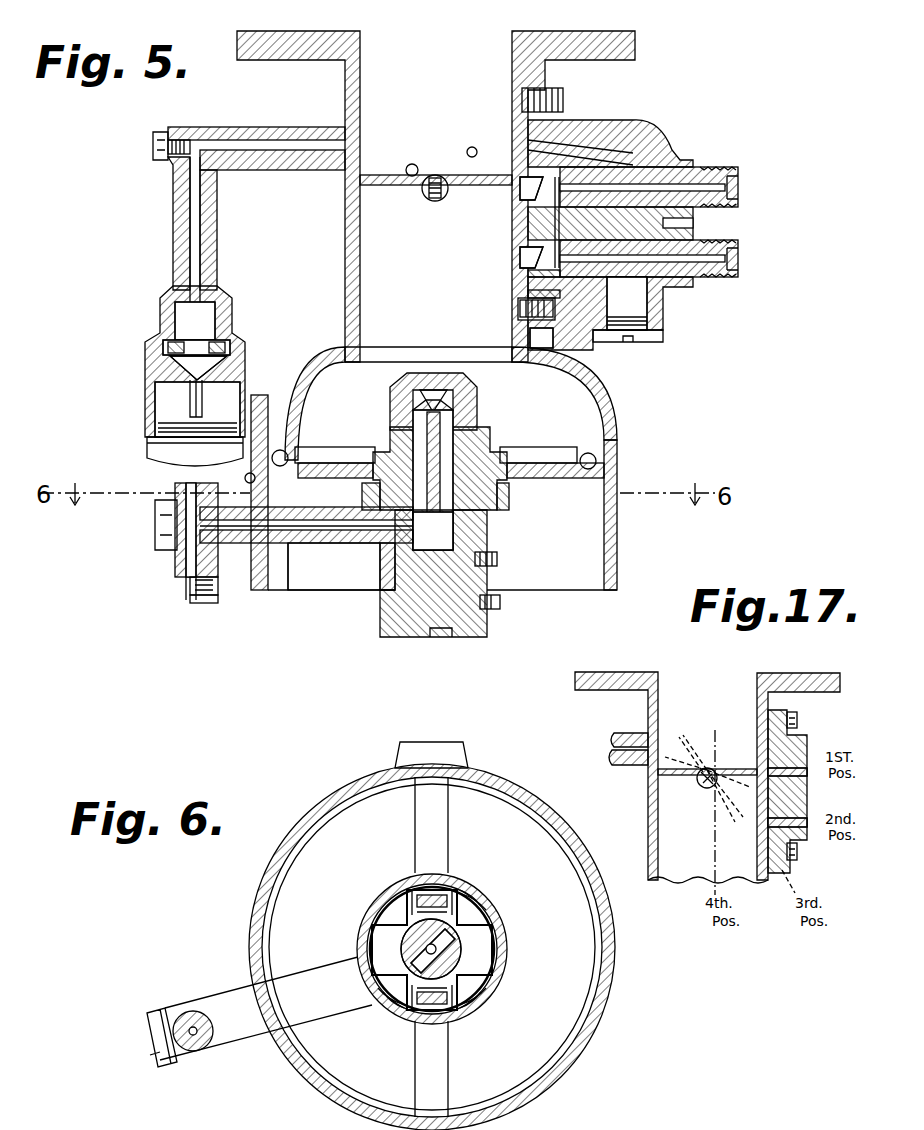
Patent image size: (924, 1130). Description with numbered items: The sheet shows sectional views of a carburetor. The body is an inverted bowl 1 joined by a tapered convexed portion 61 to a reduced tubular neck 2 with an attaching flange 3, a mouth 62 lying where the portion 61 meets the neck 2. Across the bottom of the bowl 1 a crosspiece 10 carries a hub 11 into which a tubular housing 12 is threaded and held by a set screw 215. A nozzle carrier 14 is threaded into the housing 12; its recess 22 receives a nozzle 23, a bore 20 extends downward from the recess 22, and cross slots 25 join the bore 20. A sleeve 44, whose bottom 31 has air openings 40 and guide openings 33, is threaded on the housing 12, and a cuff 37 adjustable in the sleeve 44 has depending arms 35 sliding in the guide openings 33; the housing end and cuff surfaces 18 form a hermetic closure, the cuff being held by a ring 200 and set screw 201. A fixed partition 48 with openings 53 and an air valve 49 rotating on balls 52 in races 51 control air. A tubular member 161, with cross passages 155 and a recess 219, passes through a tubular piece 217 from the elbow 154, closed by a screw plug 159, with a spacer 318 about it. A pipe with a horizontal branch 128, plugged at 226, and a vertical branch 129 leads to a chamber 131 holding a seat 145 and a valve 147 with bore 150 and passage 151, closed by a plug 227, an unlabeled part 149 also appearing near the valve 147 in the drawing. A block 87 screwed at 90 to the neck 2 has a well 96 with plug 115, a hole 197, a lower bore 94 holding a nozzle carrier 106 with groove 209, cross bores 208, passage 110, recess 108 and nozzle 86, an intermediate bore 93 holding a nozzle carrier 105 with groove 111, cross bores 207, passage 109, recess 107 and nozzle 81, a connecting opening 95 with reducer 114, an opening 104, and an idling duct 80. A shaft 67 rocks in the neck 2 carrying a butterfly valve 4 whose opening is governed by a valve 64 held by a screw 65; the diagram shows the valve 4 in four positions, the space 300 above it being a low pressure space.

In FIG. 5, the inverted bowl 1 is at (617, 550).
In FIG. 6, the inverted bowl 1 is at (578, 842).
In FIG. 5, the reduced tubular neck 2 is at (345, 78).
In FIG. 17, the reduced tubular neck 2 is at (648, 714).
In FIG. 5, the attaching flange 3 is at (245, 40).
In FIG. 17, the attaching flange 3 is at (578, 686).
In FIG. 5, the butterfly valve 4 is at (390, 186).
In FIG. 6, the crosspiece 10 is at (440, 817).
In FIG. 5, the hub 11 is at (385, 612).
In FIG. 5, the tubular housing 12 is at (455, 537).
In FIG. 6, the tubular housing 12 is at (452, 937).
In FIG. 5, the nozzle carrier 14 is at (470, 452).
In FIG. 6, the nozzle carrier 14 is at (466, 949).
In FIG. 5, the hermetic closure surfaces 18 is at (395, 387).
In FIG. 5, the bore 20 is at (480, 432).
In FIG. 6, the bore 20 is at (415, 992).
In FIG. 5, the recess 22 is at (465, 397).
In FIG. 5, the nozzle 23 is at (437, 375).
In FIG. 5, the cross slots 25 is at (392, 557).
In FIG. 5, the bottom of sleeve 31 is at (544, 545).
In FIG. 6, the guide openings 33 is at (437, 897).
In FIG. 6, the depending arms 35 is at (425, 897).
In FIG. 5, the cuff 37 is at (455, 414).
In FIG. 5, the openings 40 is at (375, 497).
In FIG. 6, the openings 40 is at (470, 902).
In FIG. 5, the sleeve 44 is at (378, 447).
In FIG. 6, the sleeve 44 is at (508, 964).
In FIG. 5, the partition 48 is at (612, 440).
In FIG. 5, the air valve 49 is at (515, 477).
In FIG. 5, the races 51 is at (290, 450).
In FIG. 5, the balls 52 is at (280, 450).
In FIG. 5, the openings 53 is at (318, 458).
In FIG. 5, the tapered convexed portion 61 is at (590, 450).
In FIG. 5, the mouth 62 is at (362, 354).
In FIG. 5, the valve 64 is at (376, 175).
In FIG. 5, the combined pivot and clamp screw 65 is at (412, 163).
In FIG. 5, the shaft 67 is at (432, 201).
In FIG. 17, the shaft 67 is at (703, 788).
In FIG. 5, the idling adjustable duct 80 is at (565, 165).
In FIG. 17, the idling adjustable duct 80 is at (772, 722).
In FIG. 5, the nozzle 81 is at (522, 192).
In FIG. 17, the nozzle 81 is at (768, 773).
In FIG. 5, the nozzle 86 is at (522, 256).
In FIG. 17, the nozzle 86 is at (768, 823).
In FIG. 5, the block 87 is at (640, 150).
In FIG. 5, the screw 90 is at (560, 95).
In FIG. 5, the intermediate bore 93 is at (610, 165).
In FIG. 5, the lower bore 94 is at (545, 298).
In FIG. 17, the lower bore 94 is at (798, 872).
In FIG. 5, the connecting opening 95 is at (697, 222).
In FIG. 5, the well 96 is at (650, 322).
In FIG. 5, the opening 104 is at (440, 132).
In FIG. 5, the nozzle carrier 105 is at (740, 187).
In FIG. 17, the nozzle carrier 105 is at (790, 752).
In FIG. 5, the nozzle carrier 106 is at (740, 247).
In FIG. 17, the nozzle carrier 106 is at (802, 847).
In FIG. 5, the enlarged recess 107 is at (520, 162).
In FIG. 5, the enlarged recess 108 is at (540, 278).
In FIG. 5, the longitudinal passage 109 is at (655, 135).
In FIG. 17, the longitudinal passage 109 is at (808, 792).
In FIG. 5, the longitudinal passage 110 is at (700, 273).
In FIG. 5, the external circumferential groove 111 is at (660, 160).
In FIG. 5, the reducer 114 is at (553, 228).
In FIG. 5, the screw plug 115 is at (600, 342).
In FIG. 5, the horizontal branch 128 is at (262, 172).
In FIG. 6, the horizontal branch 128 is at (431, 755).
In FIG. 17, the horizontal branch 128 is at (612, 740).
In FIG. 5, the vertical depending branch 129 is at (210, 234).
In FIG. 5, the chamber 131 is at (178, 364).
In FIG. 5, the seat 145 is at (240, 347).
In FIG. 5, the downwardly closing valve 147 is at (175, 392).
In FIG. 5, the rod 149 is at (190, 295).
In FIG. 5, the longitudinal bore 150 is at (185, 322).
In FIG. 5, the transverse passage 151 is at (172, 348).
In FIG. 5, the elbow 154 is at (180, 572).
In FIG. 6, the elbow 154 is at (195, 1052).
In FIG. 5, the cross passages 155 is at (178, 537).
In FIG. 5, the screw plug 159 is at (190, 602).
In FIG. 5, the tubular member 161 is at (285, 572).
In FIG. 6, the tubular member 161 is at (152, 1040).
In FIG. 5, the hole 197 is at (680, 300).
In FIG. 5, the ring 200 is at (385, 567).
In FIG. 5, the set screw 201 is at (498, 562).
In FIG. 5, the cross bores 207 is at (700, 175).
In FIG. 5, the cross bores 208 is at (705, 261).
In FIG. 5, the external circumferential groove 209 is at (690, 295).
In FIG. 5, the set screw 215 is at (501, 604).
In FIG. 5, the tubular piece 217 is at (235, 562).
In FIG. 6, the tubular piece 217 is at (225, 1002).
In FIG. 5, the external circumferential recess 219 is at (175, 514).
In FIG. 5, the screw closure plug 226 is at (150, 140).
In FIG. 5, the removable screw plug 227 is at (150, 452).
In FIG. 5, the space 300 is at (440, 57).
In FIG. 17, the space 300 is at (666, 682).
In FIG. 5, the spacer 318 is at (310, 522).
In FIG. 6, the spacer 318 is at (297, 972).